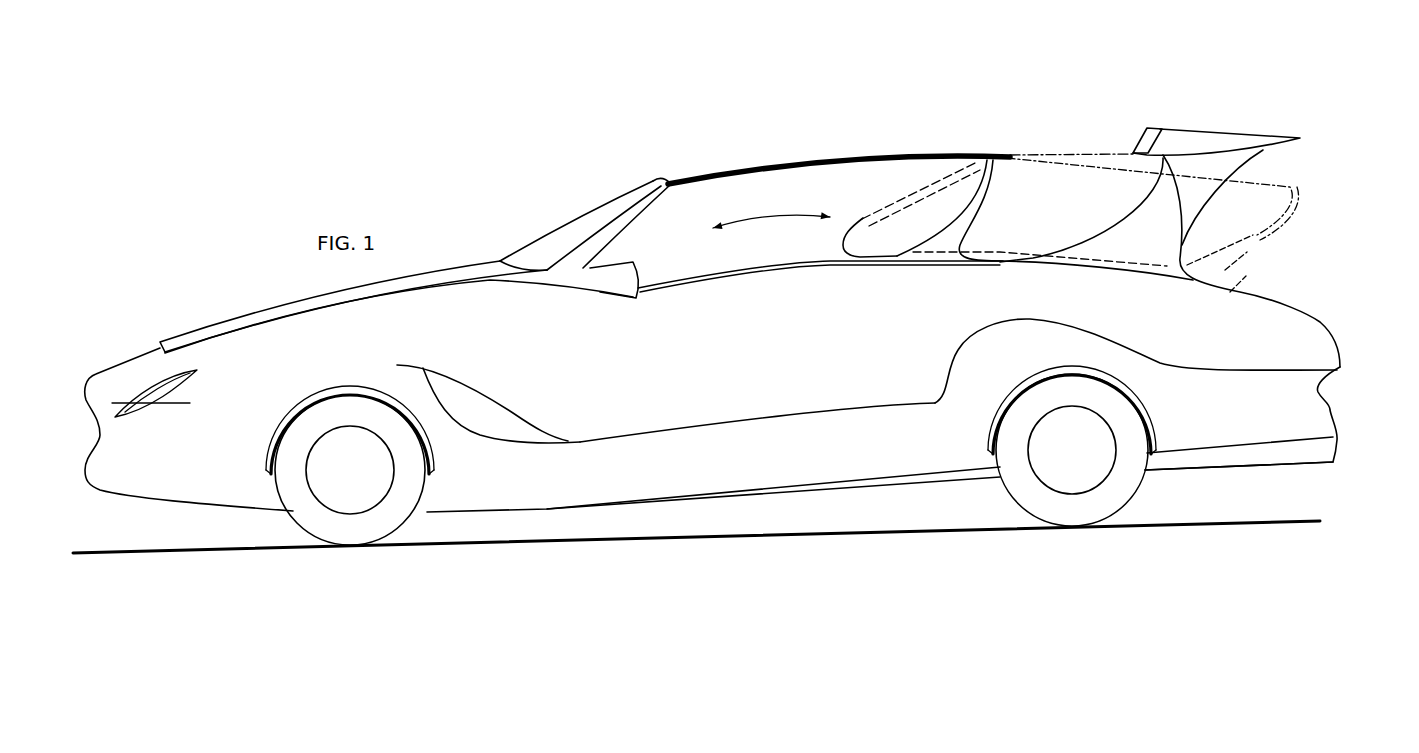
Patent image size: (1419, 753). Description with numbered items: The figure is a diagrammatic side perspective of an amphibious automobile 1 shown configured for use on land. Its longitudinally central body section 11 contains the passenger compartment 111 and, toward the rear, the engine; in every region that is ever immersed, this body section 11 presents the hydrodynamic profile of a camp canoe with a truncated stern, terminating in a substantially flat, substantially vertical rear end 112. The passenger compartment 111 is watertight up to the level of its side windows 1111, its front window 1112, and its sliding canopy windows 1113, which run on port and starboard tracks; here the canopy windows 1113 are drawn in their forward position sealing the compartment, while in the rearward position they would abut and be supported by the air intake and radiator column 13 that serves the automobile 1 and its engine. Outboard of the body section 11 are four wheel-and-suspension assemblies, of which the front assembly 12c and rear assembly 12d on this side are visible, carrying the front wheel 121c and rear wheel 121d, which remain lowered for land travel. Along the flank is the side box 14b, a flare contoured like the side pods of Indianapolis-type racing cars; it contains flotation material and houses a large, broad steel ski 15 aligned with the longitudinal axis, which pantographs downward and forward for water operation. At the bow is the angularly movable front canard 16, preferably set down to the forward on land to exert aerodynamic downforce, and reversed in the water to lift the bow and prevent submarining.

The amphibious automobile 1 is at (987, 70).
The body section 11 is at (733, 346).
The passenger compartment 111 is at (687, 203).
The side windows 1111 is at (770, 212).
The front window 1112 is at (560, 232).
The canopy windows 1113 is at (900, 153).
The rear end 112 is at (1336, 398).
The wheel-and-suspension assembly 12c is at (363, 492).
The wheel 121c is at (320, 524).
The wheel-and-suspension assembly 12d is at (1090, 473).
The wheel 121d is at (1045, 510).
The air intake and radiator column 13 is at (1210, 137).
The side box 14b is at (707, 411).
The ski 15 is at (507, 432).
The front canard 16 is at (160, 394).